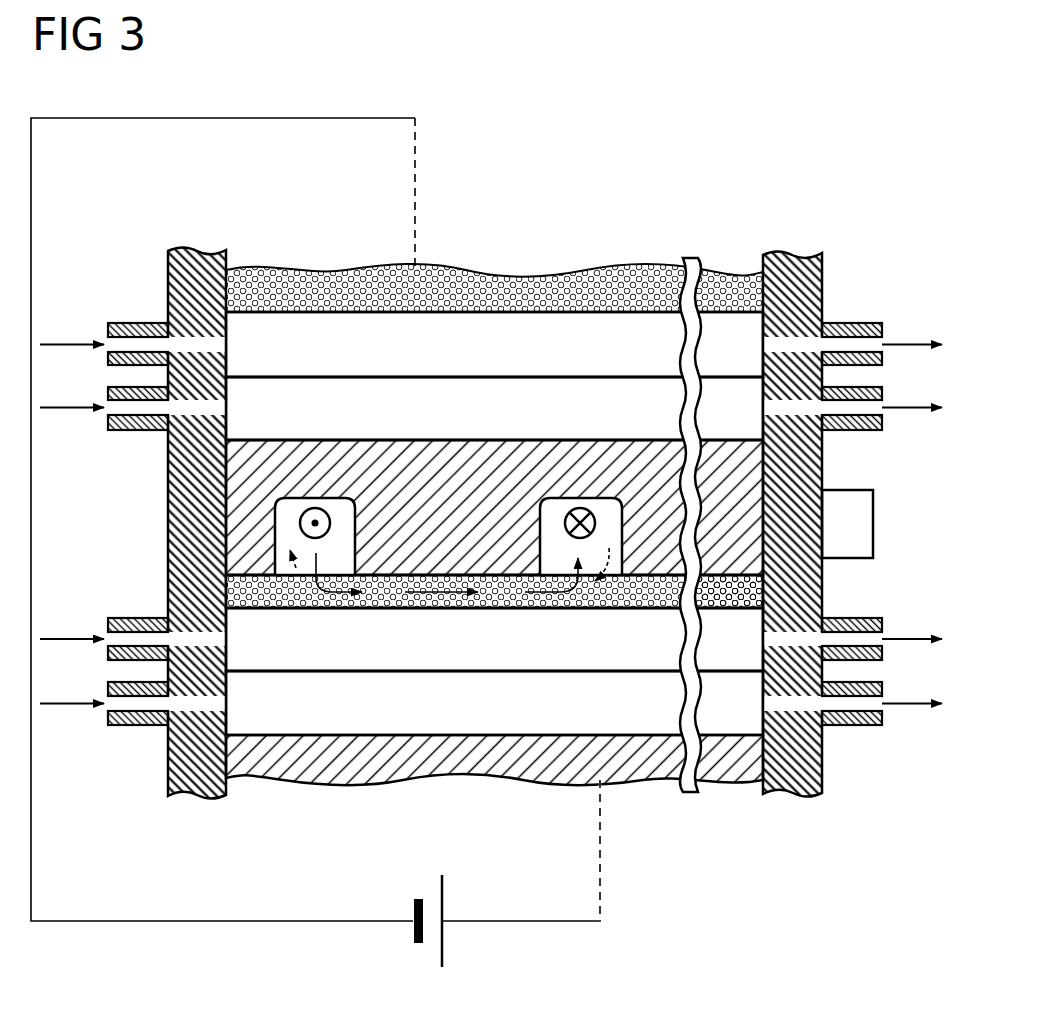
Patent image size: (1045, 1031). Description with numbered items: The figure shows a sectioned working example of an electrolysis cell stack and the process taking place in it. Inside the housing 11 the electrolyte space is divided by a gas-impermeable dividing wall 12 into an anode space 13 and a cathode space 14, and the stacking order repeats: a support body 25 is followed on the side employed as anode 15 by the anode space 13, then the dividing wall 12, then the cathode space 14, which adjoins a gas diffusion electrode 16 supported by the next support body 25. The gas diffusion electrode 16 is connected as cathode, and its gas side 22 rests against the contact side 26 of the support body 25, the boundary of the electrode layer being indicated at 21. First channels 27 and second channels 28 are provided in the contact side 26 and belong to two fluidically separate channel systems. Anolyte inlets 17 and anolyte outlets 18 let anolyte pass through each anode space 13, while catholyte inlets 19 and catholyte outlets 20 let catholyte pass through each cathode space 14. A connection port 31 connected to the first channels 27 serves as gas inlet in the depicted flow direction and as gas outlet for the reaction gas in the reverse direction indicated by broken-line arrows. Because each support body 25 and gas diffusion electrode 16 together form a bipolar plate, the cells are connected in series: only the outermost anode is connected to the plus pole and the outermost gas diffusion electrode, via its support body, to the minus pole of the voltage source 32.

The housing 11 is at (183, 505).
The dividing wall 12 is at (349, 376).
The anode space 13 is at (628, 336).
The cathode space 14 is at (562, 396).
The anode 15 is at (249, 438).
The gas diffusion electrode 16 is at (373, 278).
The anolyte inlet 17 is at (108, 391).
The anolyte outlet 18 is at (876, 393).
The catholyte inlet 19 is at (108, 328).
The catholyte outlet 20 is at (876, 329).
The electrode boundary 21 is at (260, 318).
The gas side 22 is at (247, 573).
The support body 25 is at (240, 545).
The contact side 26 is at (737, 582).
The first channels 27 is at (357, 527).
The second channels 28 is at (540, 529).
The connection port 31 is at (862, 527).
The voltage source 32 is at (447, 940).